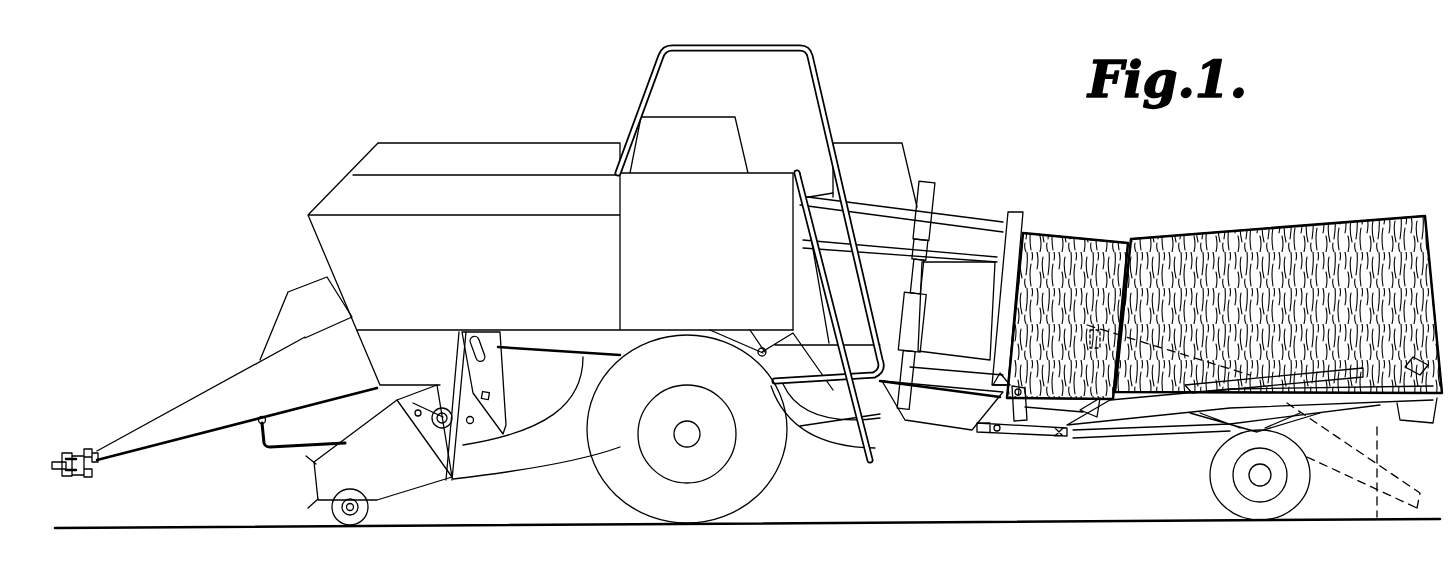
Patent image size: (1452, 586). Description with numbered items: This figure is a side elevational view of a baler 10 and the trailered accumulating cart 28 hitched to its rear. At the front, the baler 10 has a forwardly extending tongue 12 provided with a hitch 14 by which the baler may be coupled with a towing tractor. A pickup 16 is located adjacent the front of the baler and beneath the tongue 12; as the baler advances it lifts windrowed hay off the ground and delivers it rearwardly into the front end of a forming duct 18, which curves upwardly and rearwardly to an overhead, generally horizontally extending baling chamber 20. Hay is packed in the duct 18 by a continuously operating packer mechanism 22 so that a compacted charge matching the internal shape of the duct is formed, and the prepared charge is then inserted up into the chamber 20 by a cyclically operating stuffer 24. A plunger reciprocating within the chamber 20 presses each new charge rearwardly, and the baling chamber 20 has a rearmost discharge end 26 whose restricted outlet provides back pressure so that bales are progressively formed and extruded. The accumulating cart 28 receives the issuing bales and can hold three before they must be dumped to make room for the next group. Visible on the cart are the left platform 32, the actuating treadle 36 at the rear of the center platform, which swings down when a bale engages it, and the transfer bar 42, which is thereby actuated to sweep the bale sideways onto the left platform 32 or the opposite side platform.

The baler 10 is at (325, 122).
The tongue 12 is at (180, 408).
The hitch 14 is at (97, 453).
The pickup 16 is at (312, 493).
The forming duct 18 is at (558, 455).
The baling chamber 20 is at (554, 364).
The packer mechanism 22 is at (477, 427).
The stuffer 24 is at (483, 373).
The discharge end 26 is at (1023, 227).
The accumulating cart 28 is at (1090, 465).
The left platform 32 is at (1155, 432).
The actuating treadle 36 is at (1417, 360).
The transfer bar 42 is at (1260, 385).